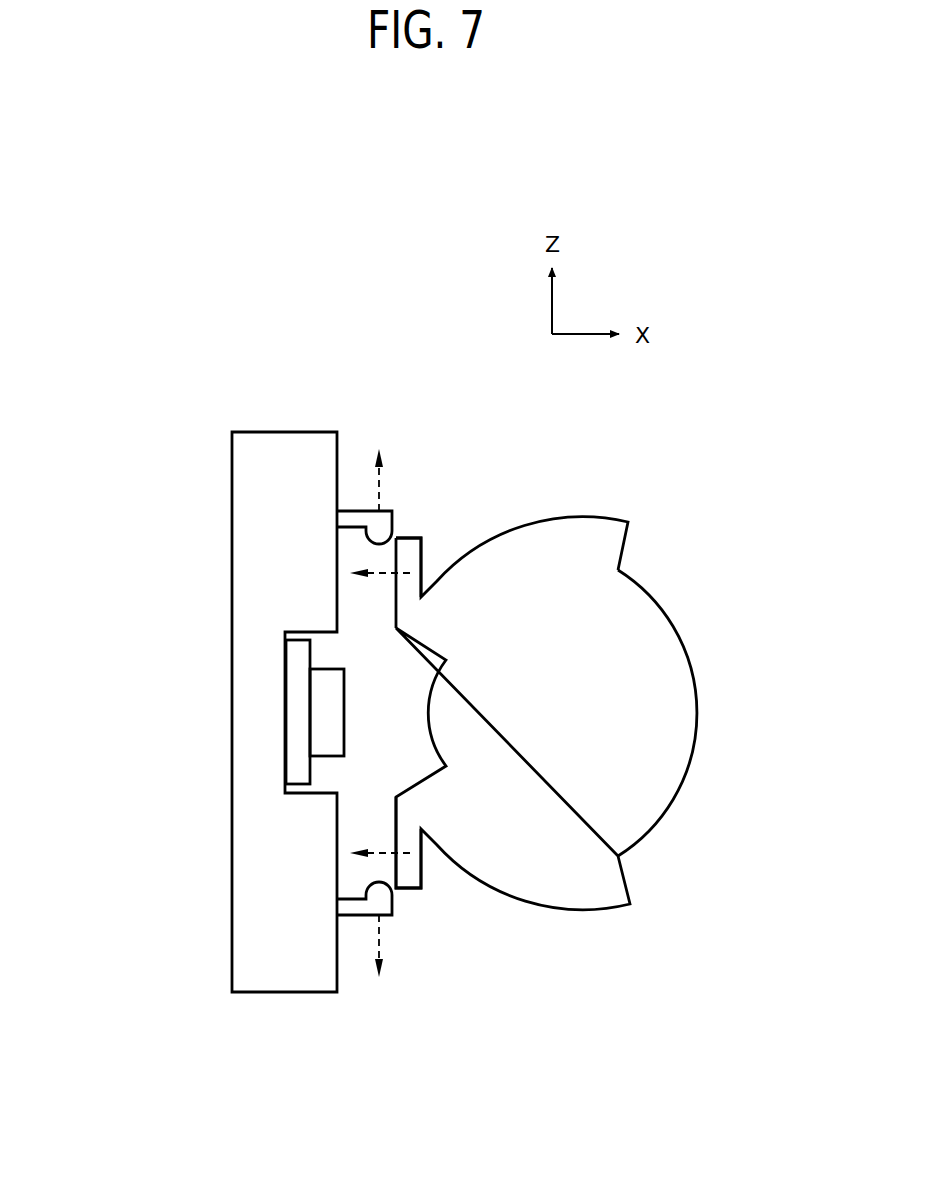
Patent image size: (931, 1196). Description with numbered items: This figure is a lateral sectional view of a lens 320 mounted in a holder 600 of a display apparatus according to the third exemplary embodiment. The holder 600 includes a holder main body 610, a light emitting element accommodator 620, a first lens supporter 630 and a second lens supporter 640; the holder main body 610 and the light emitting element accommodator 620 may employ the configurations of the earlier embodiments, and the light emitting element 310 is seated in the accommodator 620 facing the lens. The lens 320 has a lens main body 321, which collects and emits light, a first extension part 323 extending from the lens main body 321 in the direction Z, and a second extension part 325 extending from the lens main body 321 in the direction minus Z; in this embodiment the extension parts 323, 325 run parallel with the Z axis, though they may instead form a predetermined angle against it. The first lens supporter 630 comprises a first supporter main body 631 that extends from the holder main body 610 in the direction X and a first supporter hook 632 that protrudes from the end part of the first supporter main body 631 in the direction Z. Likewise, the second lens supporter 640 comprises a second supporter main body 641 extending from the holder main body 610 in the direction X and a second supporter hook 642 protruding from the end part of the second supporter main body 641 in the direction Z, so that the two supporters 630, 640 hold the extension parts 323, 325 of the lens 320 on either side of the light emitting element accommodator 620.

The holder 600 is at (253, 417).
The holder main body 610 is at (243, 448).
The light emitting element accommodator 620 is at (286, 746).
The light source 310 is at (290, 685).
The first lens supporter 630 is at (121, 498).
The first supporter main body 631 is at (352, 522).
The first supporter hook 632 is at (366, 533).
The second lens supporter 640 is at (121, 858).
The second supporter main body 641 is at (349, 907).
The second supporter hook 642 is at (352, 893).
The lens 320 is at (686, 803).
The lens main body 321 is at (697, 713).
The first extension part 323 is at (417, 537).
The second extension part 325 is at (415, 880).